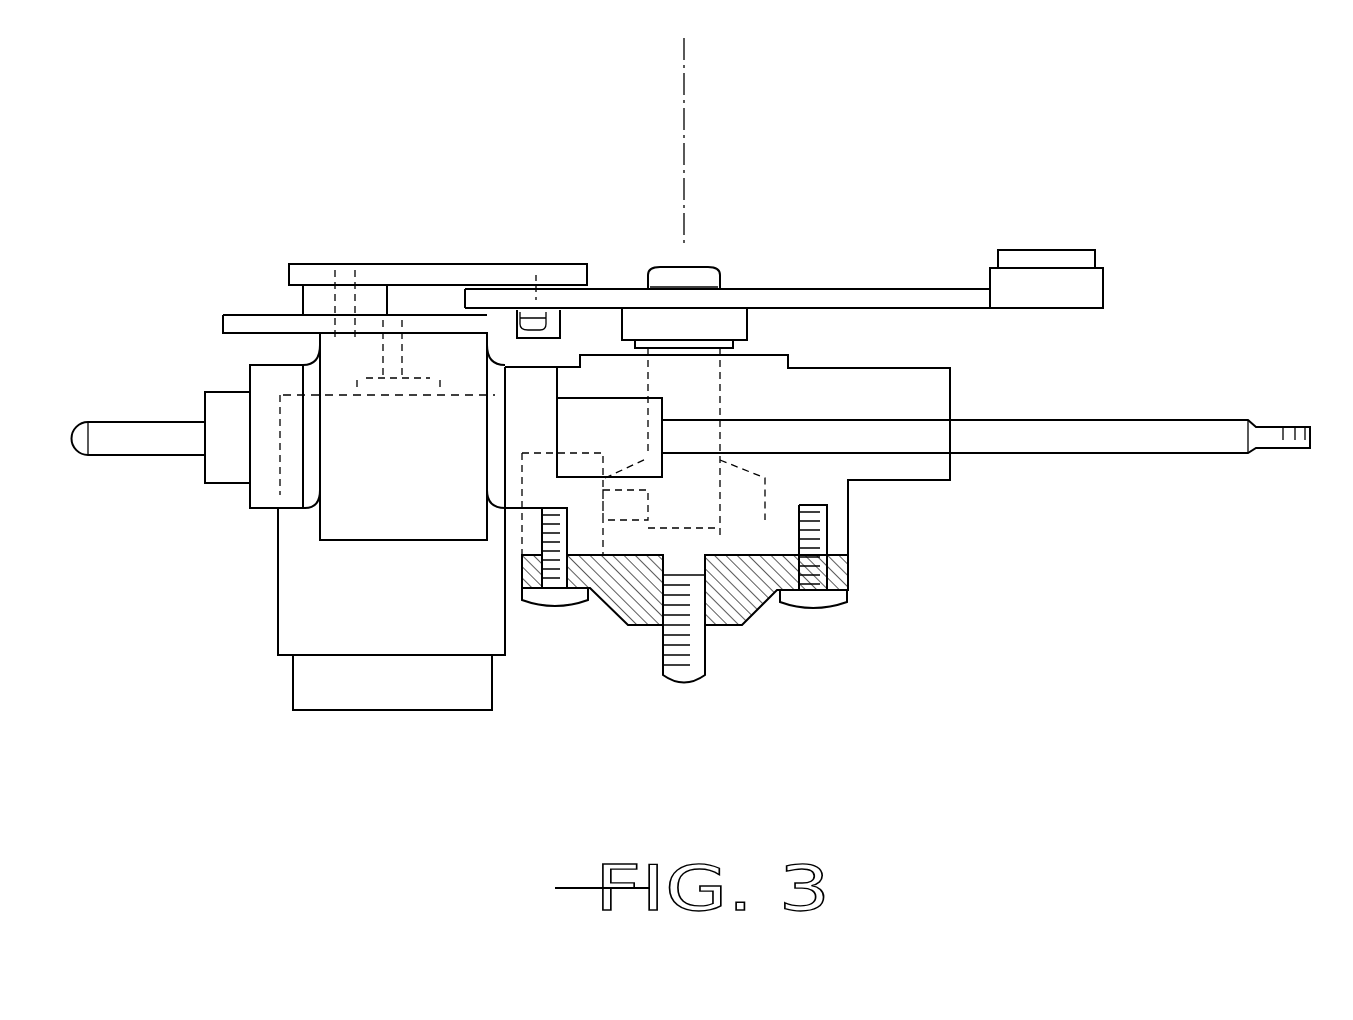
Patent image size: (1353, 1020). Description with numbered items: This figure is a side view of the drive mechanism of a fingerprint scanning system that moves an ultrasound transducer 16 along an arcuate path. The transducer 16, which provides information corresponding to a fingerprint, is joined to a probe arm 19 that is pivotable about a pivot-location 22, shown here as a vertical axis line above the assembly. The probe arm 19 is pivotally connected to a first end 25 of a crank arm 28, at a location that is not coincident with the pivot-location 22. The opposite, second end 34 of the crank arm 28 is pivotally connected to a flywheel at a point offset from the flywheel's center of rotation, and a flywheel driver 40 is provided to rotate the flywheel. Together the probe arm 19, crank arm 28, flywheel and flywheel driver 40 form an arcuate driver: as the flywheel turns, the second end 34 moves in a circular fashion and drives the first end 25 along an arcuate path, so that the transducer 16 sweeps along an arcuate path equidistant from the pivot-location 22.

The ultrasound transducer 16 is at (1075, 239).
The probe arm 19 is at (960, 308).
The pivot-location 22 is at (686, 75).
The first end 25 is at (543, 249).
The crank arm 28 is at (395, 263).
The second end 34 is at (306, 262).
The flywheel driver 40 is at (412, 448).